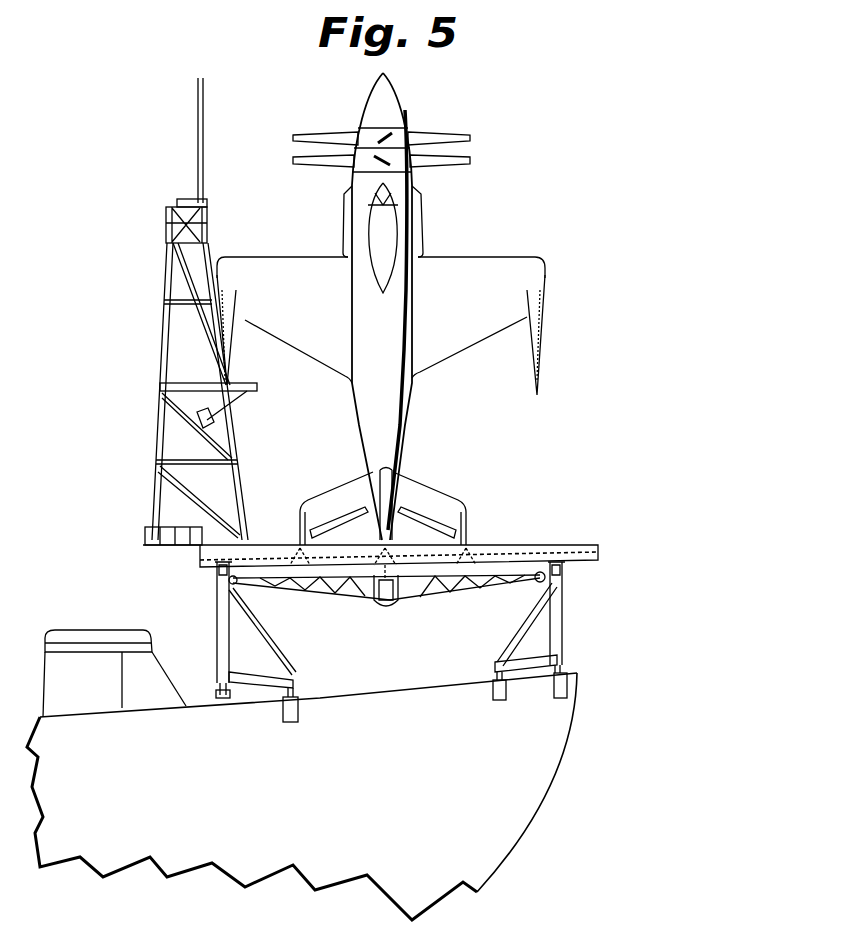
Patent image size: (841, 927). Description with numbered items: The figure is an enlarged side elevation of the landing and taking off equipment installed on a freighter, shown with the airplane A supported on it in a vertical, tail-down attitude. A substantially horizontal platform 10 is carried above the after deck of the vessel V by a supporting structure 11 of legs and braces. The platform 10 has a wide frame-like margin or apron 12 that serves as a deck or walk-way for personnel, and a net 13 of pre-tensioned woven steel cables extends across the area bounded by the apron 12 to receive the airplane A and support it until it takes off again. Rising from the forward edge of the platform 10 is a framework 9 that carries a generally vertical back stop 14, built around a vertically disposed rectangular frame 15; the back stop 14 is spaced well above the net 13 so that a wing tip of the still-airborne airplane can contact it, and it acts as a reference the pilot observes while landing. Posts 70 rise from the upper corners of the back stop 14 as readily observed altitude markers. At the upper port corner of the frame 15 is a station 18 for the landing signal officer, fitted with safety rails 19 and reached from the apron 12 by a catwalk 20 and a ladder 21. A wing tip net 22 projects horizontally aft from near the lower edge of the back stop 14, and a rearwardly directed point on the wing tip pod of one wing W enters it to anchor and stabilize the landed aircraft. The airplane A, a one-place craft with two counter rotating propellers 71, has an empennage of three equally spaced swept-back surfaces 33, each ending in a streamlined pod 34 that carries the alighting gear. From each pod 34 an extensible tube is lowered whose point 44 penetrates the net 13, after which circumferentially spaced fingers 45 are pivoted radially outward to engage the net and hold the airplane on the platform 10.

The framework 9 is at (193, 363).
The platform 10 is at (395, 591).
The supporting structure 11 is at (563, 622).
The apron 12 is at (567, 543).
The net 13 is at (513, 553).
The back stop 14 is at (212, 348).
The rectangular frame 15 is at (224, 288).
The station 18 is at (167, 238).
The safety rails 19 is at (170, 206).
The catwalk 20 is at (147, 540).
The ladder 21 is at (156, 481).
The wing tip net 22 is at (245, 382).
The empennage surfaces 33 is at (322, 503).
The streamlined pod 34 is at (296, 533).
The point 44 is at (468, 571).
The fingers 45 is at (315, 567).
The posts 70 is at (203, 128).
The counter rotating propellers 71 is at (450, 162).
The airplane A is at (402, 306).
The wings W is at (402, 329).
The vessel V is at (542, 788).